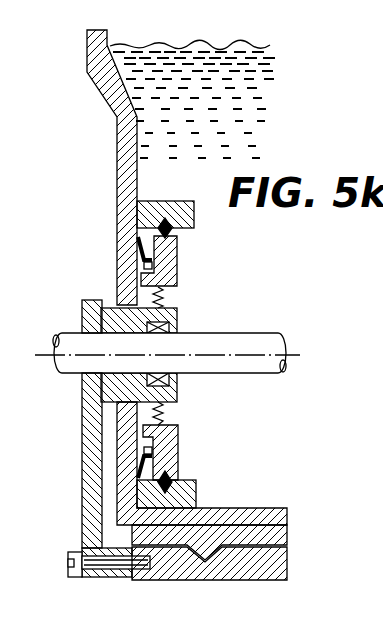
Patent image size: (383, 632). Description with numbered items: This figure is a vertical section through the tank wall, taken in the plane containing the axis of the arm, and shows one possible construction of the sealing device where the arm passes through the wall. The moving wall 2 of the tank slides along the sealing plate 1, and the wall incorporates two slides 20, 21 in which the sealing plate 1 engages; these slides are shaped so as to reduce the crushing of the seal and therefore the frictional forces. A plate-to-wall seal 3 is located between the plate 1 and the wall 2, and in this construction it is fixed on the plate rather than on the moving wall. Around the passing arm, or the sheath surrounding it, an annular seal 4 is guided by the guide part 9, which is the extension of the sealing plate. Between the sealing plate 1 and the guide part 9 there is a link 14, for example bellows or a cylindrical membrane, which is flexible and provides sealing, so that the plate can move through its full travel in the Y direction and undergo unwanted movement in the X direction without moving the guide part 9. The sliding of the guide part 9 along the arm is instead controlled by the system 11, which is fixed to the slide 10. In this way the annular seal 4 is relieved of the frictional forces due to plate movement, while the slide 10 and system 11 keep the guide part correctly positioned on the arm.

The sealing plate 1 is at (176, 262).
The moving wall 2 is at (120, 100).
The plate-to-wall seal 3 is at (140, 250).
The annular seal 4 is at (170, 383).
The guide part 9 is at (178, 318).
The slide 10 is at (272, 568).
The system 11 is at (92, 443).
The link 14 is at (162, 297).
The slide 20 is at (175, 206).
The slide 21 is at (182, 495).